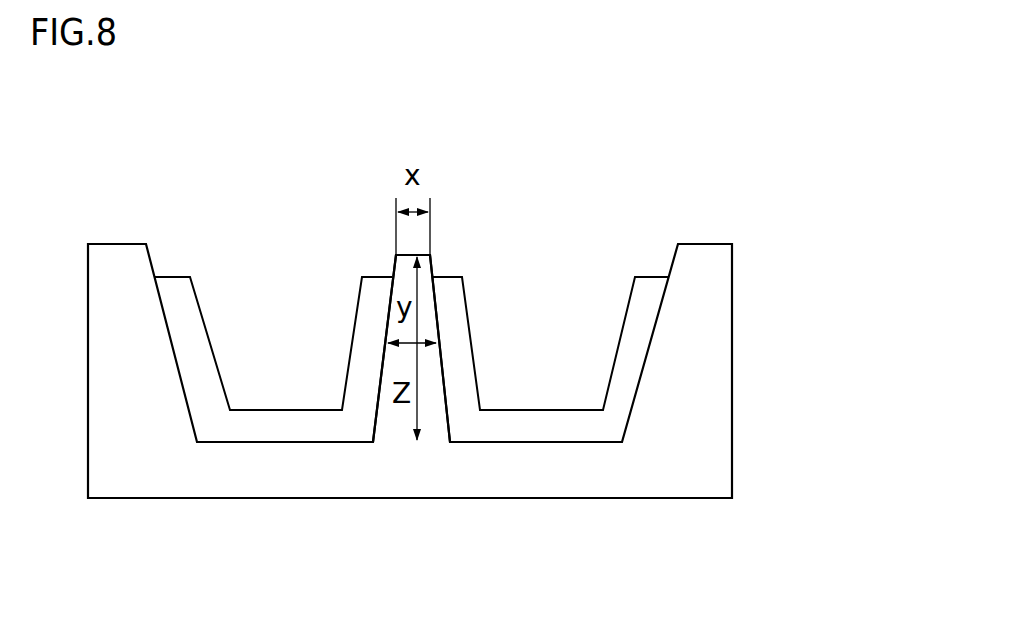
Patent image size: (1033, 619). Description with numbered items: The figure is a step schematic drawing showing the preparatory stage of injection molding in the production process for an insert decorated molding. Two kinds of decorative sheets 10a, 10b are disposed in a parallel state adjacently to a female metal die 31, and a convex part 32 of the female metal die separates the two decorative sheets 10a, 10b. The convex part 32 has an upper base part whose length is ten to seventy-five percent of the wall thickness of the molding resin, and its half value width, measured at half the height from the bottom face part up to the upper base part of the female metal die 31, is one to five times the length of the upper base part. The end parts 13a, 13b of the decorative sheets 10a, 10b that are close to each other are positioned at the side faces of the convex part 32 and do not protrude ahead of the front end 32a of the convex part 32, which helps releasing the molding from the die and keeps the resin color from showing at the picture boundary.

The female metal die 31 is at (718, 414).
The convex part 32 is at (433, 413).
The front end 32a is at (410, 247).
The decorative sheet 10a is at (645, 292).
The decorative sheet 10b is at (175, 303).
The end part 13a is at (448, 266).
The end part 13b is at (372, 266).